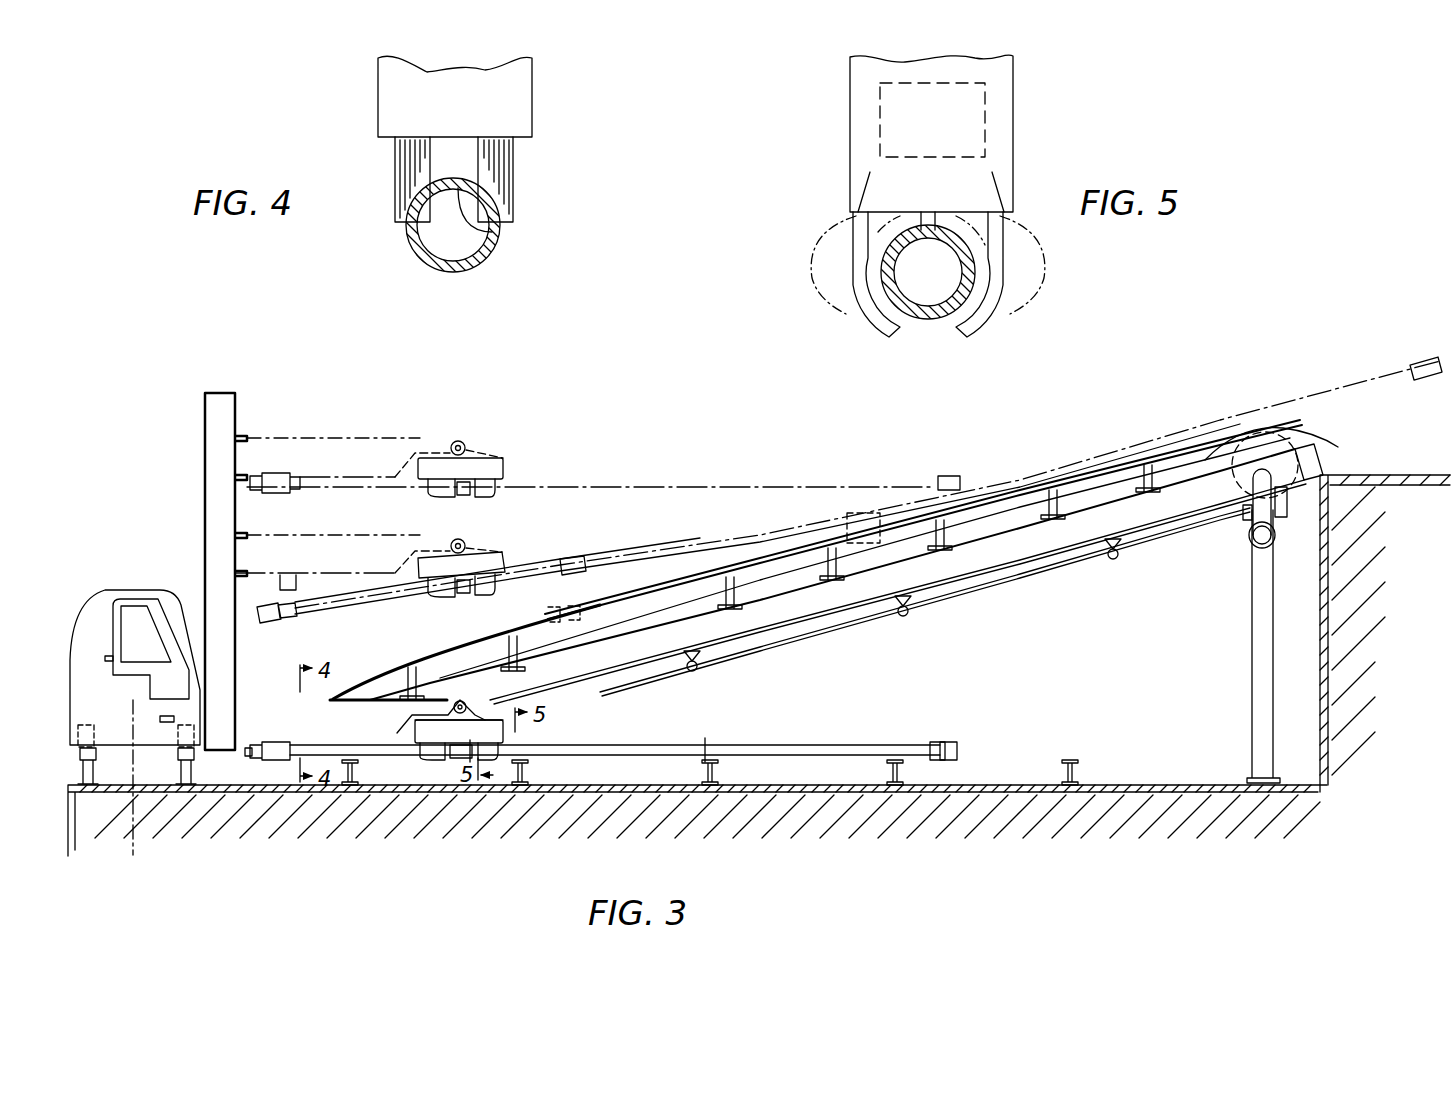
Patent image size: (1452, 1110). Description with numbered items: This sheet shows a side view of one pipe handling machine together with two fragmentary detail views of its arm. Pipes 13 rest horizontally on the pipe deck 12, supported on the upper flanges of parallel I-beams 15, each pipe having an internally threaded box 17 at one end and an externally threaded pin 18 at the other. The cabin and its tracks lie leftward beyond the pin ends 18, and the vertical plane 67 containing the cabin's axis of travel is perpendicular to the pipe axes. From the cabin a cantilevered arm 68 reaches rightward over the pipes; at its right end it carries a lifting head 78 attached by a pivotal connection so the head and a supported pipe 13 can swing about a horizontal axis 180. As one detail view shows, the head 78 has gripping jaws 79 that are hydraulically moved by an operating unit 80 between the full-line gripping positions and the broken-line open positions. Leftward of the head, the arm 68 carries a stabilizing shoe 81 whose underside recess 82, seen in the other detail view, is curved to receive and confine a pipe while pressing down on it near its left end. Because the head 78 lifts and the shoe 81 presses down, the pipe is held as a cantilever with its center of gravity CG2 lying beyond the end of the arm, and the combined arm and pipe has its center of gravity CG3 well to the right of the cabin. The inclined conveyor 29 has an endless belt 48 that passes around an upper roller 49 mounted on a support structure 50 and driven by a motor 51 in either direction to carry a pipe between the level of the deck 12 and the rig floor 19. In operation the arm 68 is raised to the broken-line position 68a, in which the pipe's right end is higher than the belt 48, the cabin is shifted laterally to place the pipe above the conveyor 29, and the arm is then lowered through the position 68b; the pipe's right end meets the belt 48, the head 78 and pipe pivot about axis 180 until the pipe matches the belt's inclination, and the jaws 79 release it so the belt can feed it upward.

In FIG. 3, the pipe deck 12 is at (1135, 785).
In FIG. 4, the pipe 13 is at (432, 270).
In FIG. 5, the pipe 13 is at (926, 325).
In FIG. 3, the pipe 13 is at (770, 750).
In FIG. 3, the I-beam 15 is at (712, 765).
In FIG. 3, the internally threaded box 17 is at (940, 745).
In FIG. 3, the externally threaded pin 18 is at (270, 758).
In FIG. 3, the rig floor 19 is at (1380, 478).
In FIG. 3, the inclined conveyor 29 is at (1000, 468).
In FIG. 3, the endless belt 48 is at (1105, 470).
In FIG. 3, the roller 49 is at (1278, 442).
In FIG. 3, the support structure 50 is at (1253, 640).
In FIG. 3, the motor 51 is at (1249, 538).
In FIG. 3, the vertical plane 67 is at (130, 830).
In FIG. 4, the arm 68 is at (530, 108).
In FIG. 3, the arm 68 is at (390, 725).
In FIG. 3, the elevated arm position 68a is at (335, 440).
In FIG. 3, the lowered arm position 68b is at (328, 560).
In FIG. 5, the lifting head 78 is at (1018, 128).
In FIG. 3, the lifting head 78 is at (485, 712).
In FIG. 5, the gripping jaws 79 is at (864, 266).
In FIG. 3, the gripping jaws 79 is at (455, 760).
In FIG. 5, the operating unit 80 is at (932, 120).
In FIG. 4, the stabilizing shoe 81 is at (395, 202).
In FIG. 3, the stabilizing shoe 81 is at (288, 742).
In FIG. 4, the recess 82 is at (494, 234).
In FIG. 3, the horizontal axis 180 is at (460, 700).
In FIG. 3, the center of gravity of pipe section CG2 is at (705, 745).
In FIG. 3, the center of gravity of combined arm and pipe CG3 is at (470, 760).